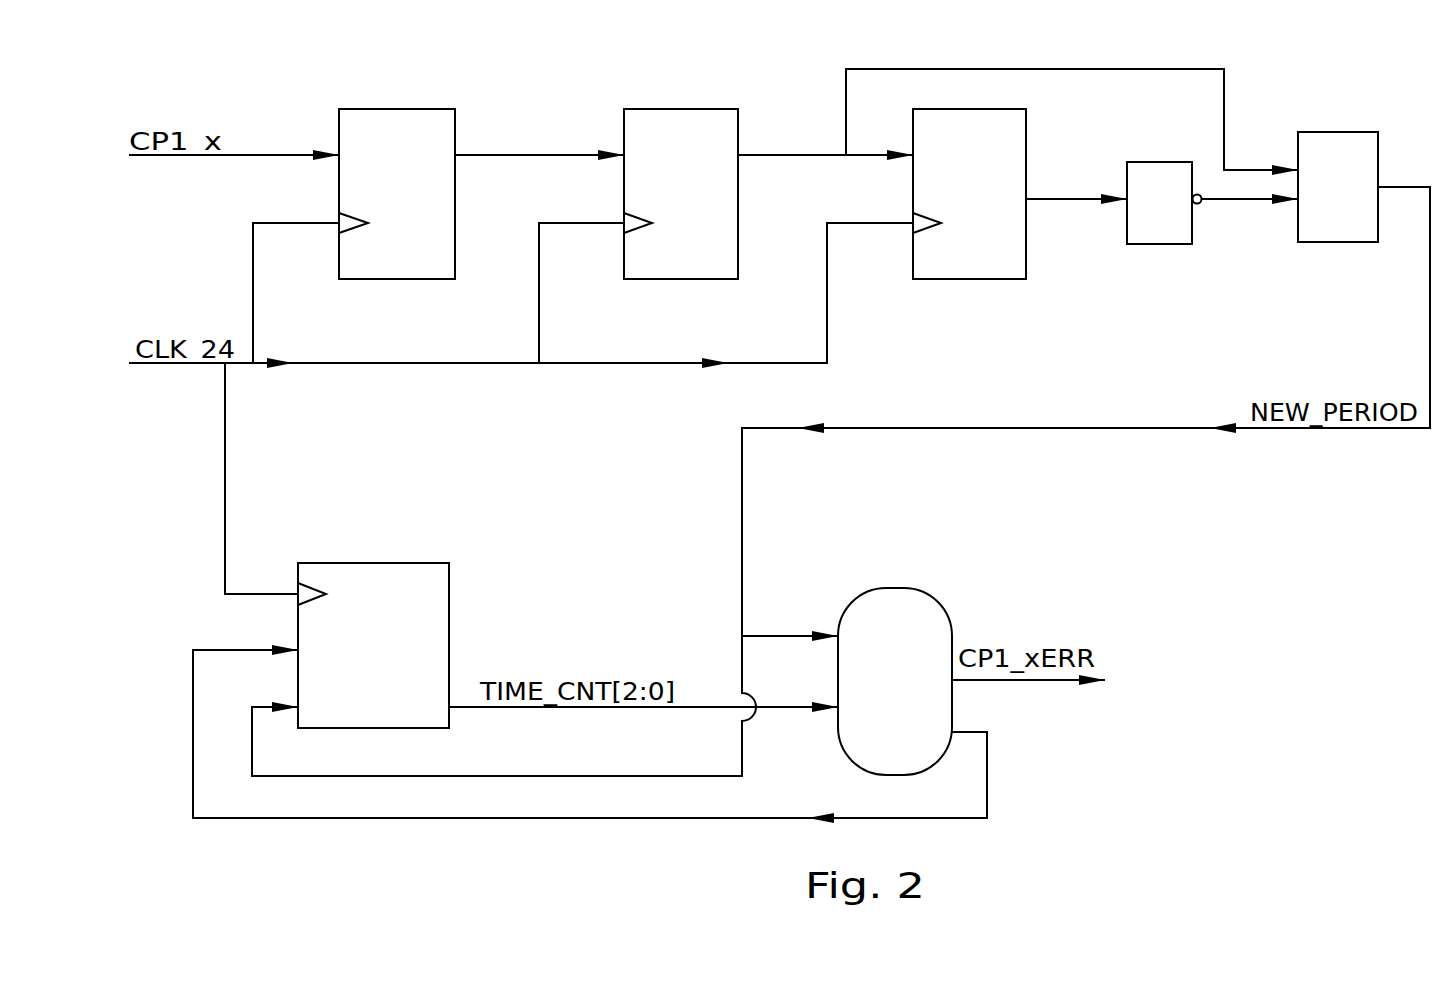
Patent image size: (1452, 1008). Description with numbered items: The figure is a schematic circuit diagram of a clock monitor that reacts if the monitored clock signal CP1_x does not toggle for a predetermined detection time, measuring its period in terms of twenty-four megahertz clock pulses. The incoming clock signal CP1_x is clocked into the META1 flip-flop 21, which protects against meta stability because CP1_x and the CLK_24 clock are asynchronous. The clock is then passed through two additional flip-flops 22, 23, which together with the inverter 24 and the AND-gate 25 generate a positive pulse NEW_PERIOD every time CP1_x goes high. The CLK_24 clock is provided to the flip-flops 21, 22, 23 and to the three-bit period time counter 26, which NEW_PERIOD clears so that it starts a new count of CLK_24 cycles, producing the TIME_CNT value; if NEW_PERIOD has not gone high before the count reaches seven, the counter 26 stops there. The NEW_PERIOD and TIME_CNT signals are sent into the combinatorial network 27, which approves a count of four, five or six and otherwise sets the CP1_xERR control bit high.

The META1 flip-flop 21 is at (393, 105).
The flip-flop 22 is at (673, 105).
The flip-flop 23 is at (1030, 153).
The inverter 24 is at (1165, 160).
The AND-gate 25 is at (1335, 130).
The 3-bit period time counter 26 is at (362, 560).
The combinatorial network 27 is at (895, 585).